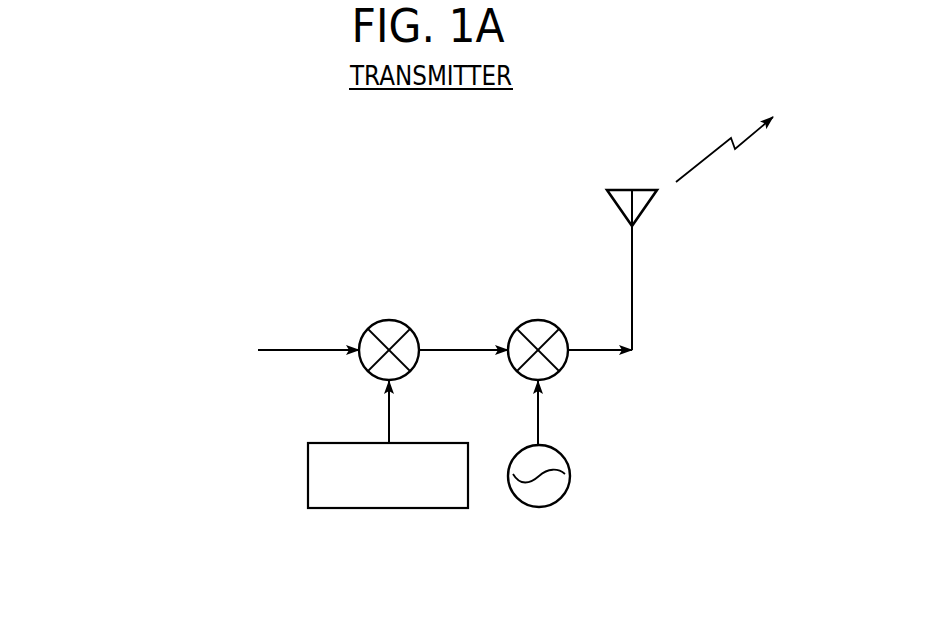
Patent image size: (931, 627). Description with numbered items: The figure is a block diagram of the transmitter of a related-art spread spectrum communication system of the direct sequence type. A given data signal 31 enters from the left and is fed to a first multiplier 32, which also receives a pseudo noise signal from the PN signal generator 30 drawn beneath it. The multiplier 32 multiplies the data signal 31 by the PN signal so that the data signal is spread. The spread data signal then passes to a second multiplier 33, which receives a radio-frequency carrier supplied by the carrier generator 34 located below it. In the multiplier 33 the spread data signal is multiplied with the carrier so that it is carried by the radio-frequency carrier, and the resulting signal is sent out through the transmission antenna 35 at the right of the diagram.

The pseudo noise signal generator 30 is at (418, 508).
The data signal 31 is at (217, 349).
The multiplier 32 is at (405, 322).
The multiplier 33 is at (549, 323).
The carrier generator 34 is at (551, 505).
The transmission antenna 35 is at (642, 277).